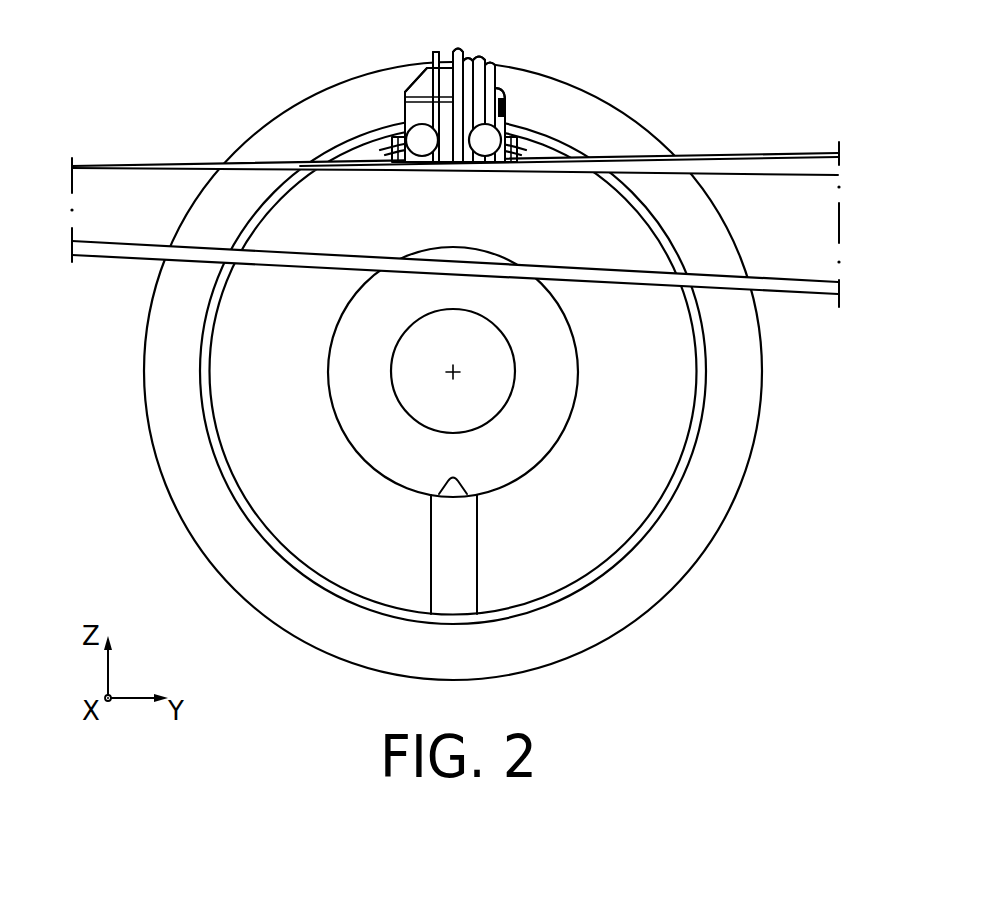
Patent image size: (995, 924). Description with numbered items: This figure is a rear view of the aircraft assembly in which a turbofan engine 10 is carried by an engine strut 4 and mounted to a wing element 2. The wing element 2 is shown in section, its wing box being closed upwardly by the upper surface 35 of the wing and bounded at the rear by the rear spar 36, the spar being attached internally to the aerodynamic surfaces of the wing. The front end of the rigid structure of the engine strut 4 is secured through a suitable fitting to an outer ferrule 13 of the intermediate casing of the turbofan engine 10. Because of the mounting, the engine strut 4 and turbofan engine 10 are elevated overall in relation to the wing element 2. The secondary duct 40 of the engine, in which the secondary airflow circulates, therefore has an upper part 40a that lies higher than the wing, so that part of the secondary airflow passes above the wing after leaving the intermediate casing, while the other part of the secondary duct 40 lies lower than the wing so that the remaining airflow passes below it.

The wing element 2 is at (455, 199).
The upper surface 35 is at (180, 162).
The rear spar 36 is at (123, 258).
The engine strut 4 is at (446, 85).
The outer ferrule 13 is at (367, 137).
The secondary duct 40 is at (270, 412).
The upper part of the duct 40a is at (533, 150).
The turbofan engine 10 is at (278, 643).